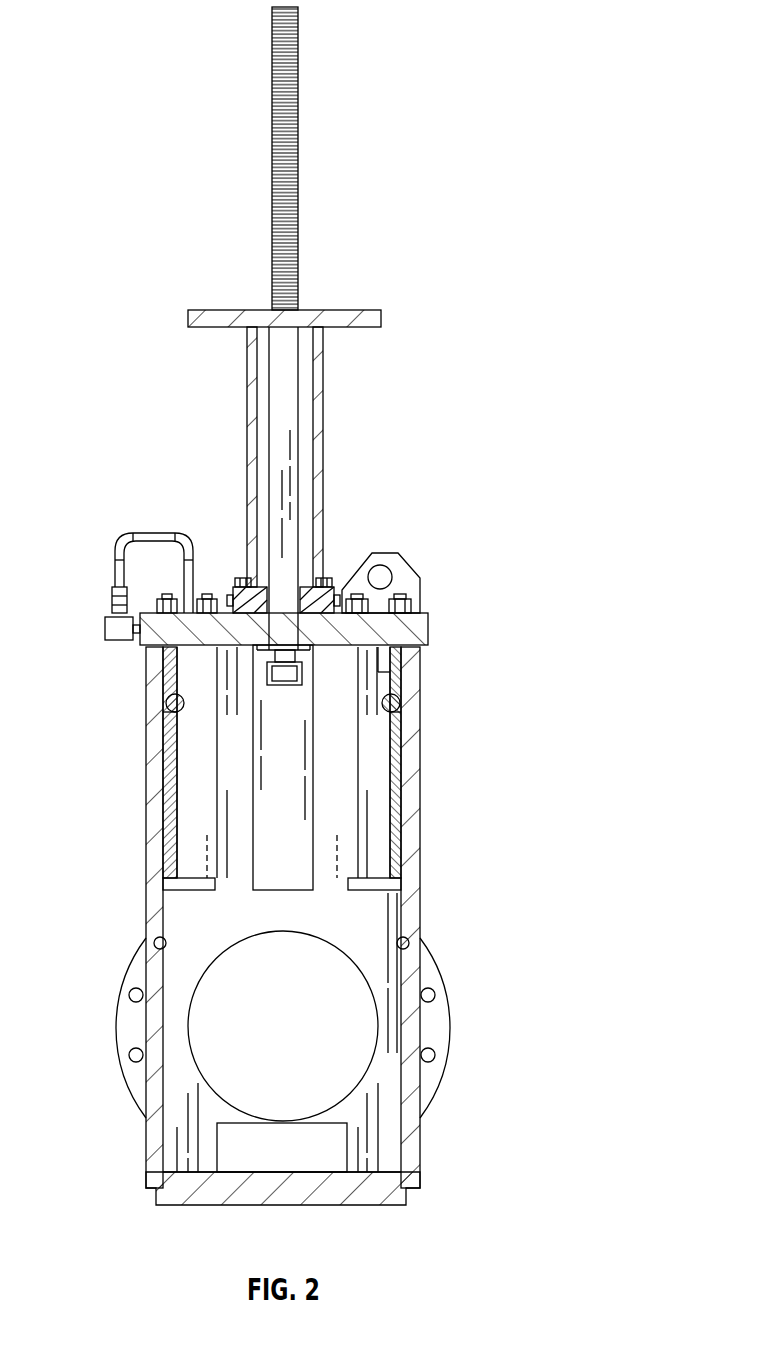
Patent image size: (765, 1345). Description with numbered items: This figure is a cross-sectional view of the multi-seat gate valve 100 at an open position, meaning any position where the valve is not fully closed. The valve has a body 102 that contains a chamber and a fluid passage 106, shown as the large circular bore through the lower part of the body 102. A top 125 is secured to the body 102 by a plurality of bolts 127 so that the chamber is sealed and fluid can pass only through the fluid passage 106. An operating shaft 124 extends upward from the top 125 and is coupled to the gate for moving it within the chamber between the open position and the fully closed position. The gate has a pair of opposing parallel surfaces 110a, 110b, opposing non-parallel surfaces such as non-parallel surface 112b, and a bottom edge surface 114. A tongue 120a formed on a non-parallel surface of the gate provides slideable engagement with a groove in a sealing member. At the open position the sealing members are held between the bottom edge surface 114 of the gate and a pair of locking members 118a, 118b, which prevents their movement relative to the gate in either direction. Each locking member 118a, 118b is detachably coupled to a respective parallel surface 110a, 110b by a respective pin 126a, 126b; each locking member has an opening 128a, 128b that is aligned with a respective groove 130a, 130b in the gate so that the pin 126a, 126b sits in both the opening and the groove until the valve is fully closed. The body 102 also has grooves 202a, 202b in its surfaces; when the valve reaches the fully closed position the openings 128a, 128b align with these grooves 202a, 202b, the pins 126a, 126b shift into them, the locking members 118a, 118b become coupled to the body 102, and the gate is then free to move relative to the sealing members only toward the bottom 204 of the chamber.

The multi-seat gate valve 100 is at (601, 31).
The body 102 is at (157, 738).
The fluid passage 106 is at (308, 1068).
The opposing parallel surface 110a is at (165, 795).
The opposing parallel surface 110b is at (412, 797).
The opposing non-parallel surface 112b is at (402, 676).
The bottom edge surface 114 is at (162, 882).
The locking member 118a is at (170, 823).
The locking member 118b is at (404, 825).
The tongue 120a is at (263, 836).
The operating shaft 124 is at (300, 172).
The top 125 is at (423, 612).
The pin 126a is at (167, 702).
The pin 126b is at (399, 702).
The bolt 127 is at (403, 596).
The opening 128a is at (167, 708).
The opening 128b is at (399, 709).
The groove 130a is at (188, 702).
The groove 130b is at (381, 703).
The groove 202a is at (158, 944).
The groove 202b is at (406, 944).
The bottom 204 is at (310, 1188).